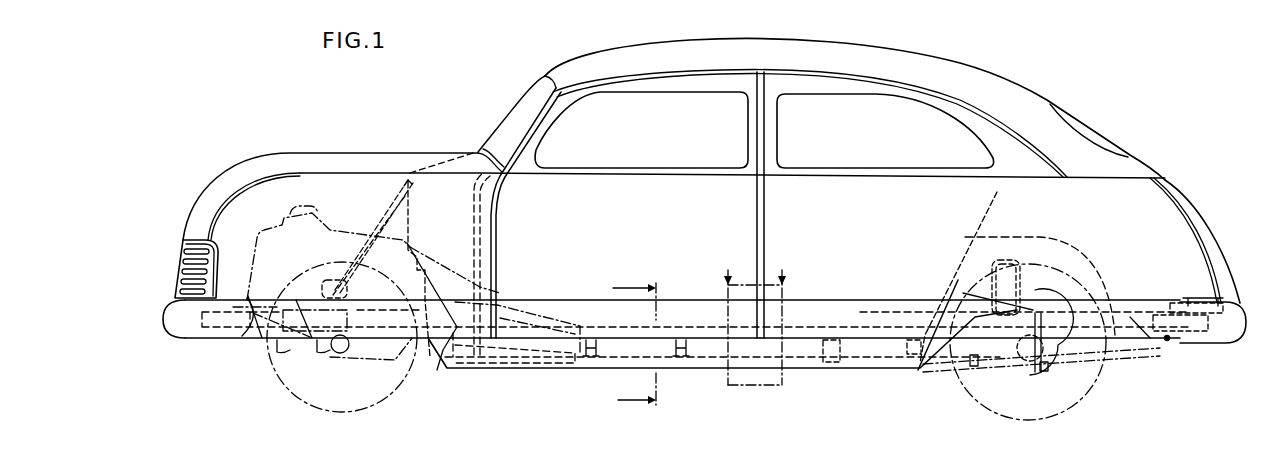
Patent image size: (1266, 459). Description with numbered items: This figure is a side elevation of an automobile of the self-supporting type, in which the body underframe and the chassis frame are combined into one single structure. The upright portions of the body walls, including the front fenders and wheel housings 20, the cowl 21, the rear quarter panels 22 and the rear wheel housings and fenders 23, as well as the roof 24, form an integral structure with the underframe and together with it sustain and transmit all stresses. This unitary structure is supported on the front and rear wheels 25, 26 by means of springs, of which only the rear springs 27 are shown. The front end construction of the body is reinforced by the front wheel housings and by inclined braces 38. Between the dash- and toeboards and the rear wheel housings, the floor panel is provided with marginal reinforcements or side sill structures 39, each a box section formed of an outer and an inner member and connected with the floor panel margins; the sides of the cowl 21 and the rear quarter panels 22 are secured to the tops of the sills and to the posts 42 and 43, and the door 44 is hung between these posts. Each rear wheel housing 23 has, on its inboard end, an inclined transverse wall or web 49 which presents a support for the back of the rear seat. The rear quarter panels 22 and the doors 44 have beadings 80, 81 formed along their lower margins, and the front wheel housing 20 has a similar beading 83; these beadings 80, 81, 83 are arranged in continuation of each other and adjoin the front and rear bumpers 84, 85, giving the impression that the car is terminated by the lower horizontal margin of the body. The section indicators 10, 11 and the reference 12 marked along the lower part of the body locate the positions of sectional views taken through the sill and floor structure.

The section line 10- 10 is at (634, 345).
The section line 11- 11 is at (757, 318).
The section 12 is at (773, 387).
The front fenders and wheel housings 20 is at (238, 198).
The cowl 21 is at (478, 150).
The rear quarter panels 22 is at (865, 225).
The rear wheel housings and fenders 23 is at (1077, 253).
The roof 24 is at (897, 56).
The front wheels 25 is at (404, 391).
The rear wheels 26 is at (1095, 393).
The rear springs 27 is at (1133, 348).
The inclined braces 38 is at (378, 228).
The side sill structures 39 is at (562, 372).
The post 42 is at (498, 197).
The post 43 is at (766, 143).
The door 44 is at (626, 225).
The inclined transverse wall 49 is at (985, 212).
The beading 80 is at (877, 302).
The beading 81 is at (567, 292).
The beading 83 is at (248, 338).
The front bumper 84 is at (162, 307).
The rear bumper 85 is at (1236, 308).